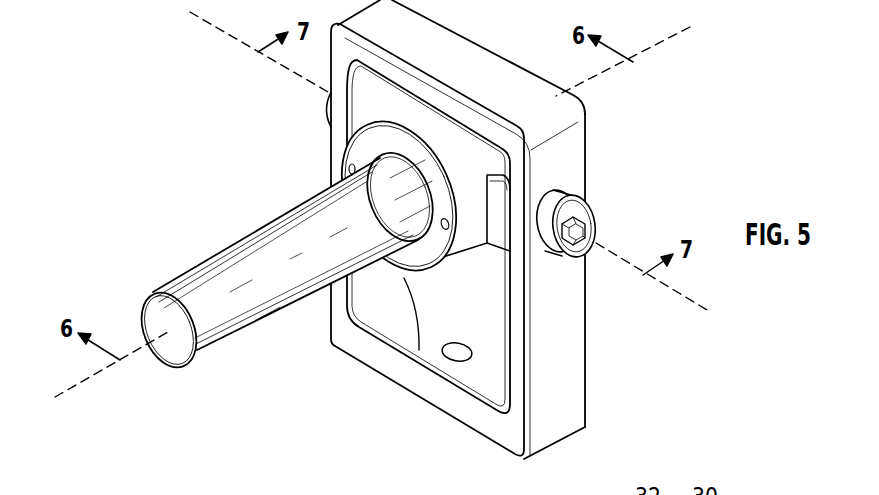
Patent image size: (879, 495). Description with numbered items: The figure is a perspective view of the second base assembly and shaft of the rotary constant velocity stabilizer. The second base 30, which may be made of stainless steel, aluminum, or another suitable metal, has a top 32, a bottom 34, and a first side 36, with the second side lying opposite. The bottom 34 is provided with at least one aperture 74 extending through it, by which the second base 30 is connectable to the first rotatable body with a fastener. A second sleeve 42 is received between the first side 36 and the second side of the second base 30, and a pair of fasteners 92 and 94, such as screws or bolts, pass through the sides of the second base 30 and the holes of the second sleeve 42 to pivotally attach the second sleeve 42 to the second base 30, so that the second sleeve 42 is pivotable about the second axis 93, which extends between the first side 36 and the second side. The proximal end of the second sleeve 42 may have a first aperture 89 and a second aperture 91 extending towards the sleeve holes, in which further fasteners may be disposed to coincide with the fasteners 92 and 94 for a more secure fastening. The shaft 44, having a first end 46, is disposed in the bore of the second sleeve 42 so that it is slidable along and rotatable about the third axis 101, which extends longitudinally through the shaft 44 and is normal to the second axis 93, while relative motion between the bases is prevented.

The second base 30 is at (487, 244).
The top 32 is at (520, 67).
The bottom 34 is at (480, 440).
The first side 36 is at (587, 142).
The second sleeve 42 is at (401, 278).
The shaft 44 is at (216, 348).
The first end 46 is at (162, 363).
The aperture 74 is at (457, 362).
The first aperture 89 is at (315, 242).
The second aperture 91 is at (349, 167).
The fastener 92 is at (597, 210).
The second axis 93 is at (690, 300).
The fastener 94 is at (324, 115).
The third axis 101 is at (676, 38).